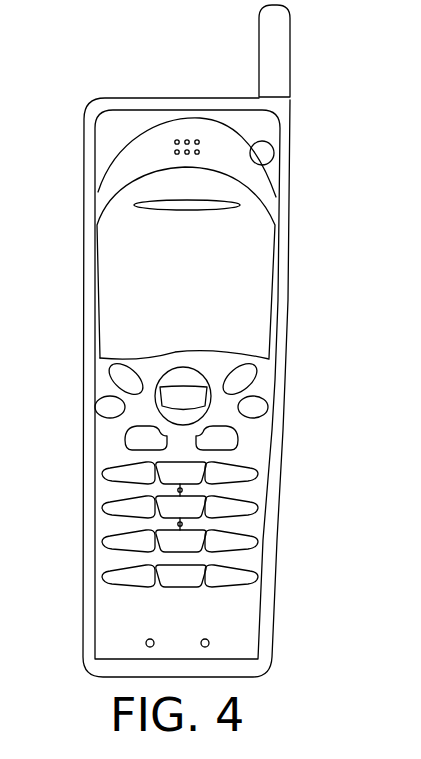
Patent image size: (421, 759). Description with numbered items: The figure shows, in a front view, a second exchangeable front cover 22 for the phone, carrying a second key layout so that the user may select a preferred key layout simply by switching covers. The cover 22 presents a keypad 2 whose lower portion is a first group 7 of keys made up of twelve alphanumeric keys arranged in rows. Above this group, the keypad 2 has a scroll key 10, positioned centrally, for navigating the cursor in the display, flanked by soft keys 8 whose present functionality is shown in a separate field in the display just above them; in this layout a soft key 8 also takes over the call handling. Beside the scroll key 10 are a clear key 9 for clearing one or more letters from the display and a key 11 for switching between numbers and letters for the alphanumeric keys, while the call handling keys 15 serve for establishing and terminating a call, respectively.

The front cover 22 is at (125, 98).
The keypad 2 is at (293, 363).
The first group of keys 7 is at (72, 460).
The soft key 8 is at (122, 378).
The clear key 9 is at (106, 407).
The scroll key 10 is at (178, 376).
The key for switching between numbers and letters 11 is at (262, 410).
The call handling keys 15 is at (132, 440).